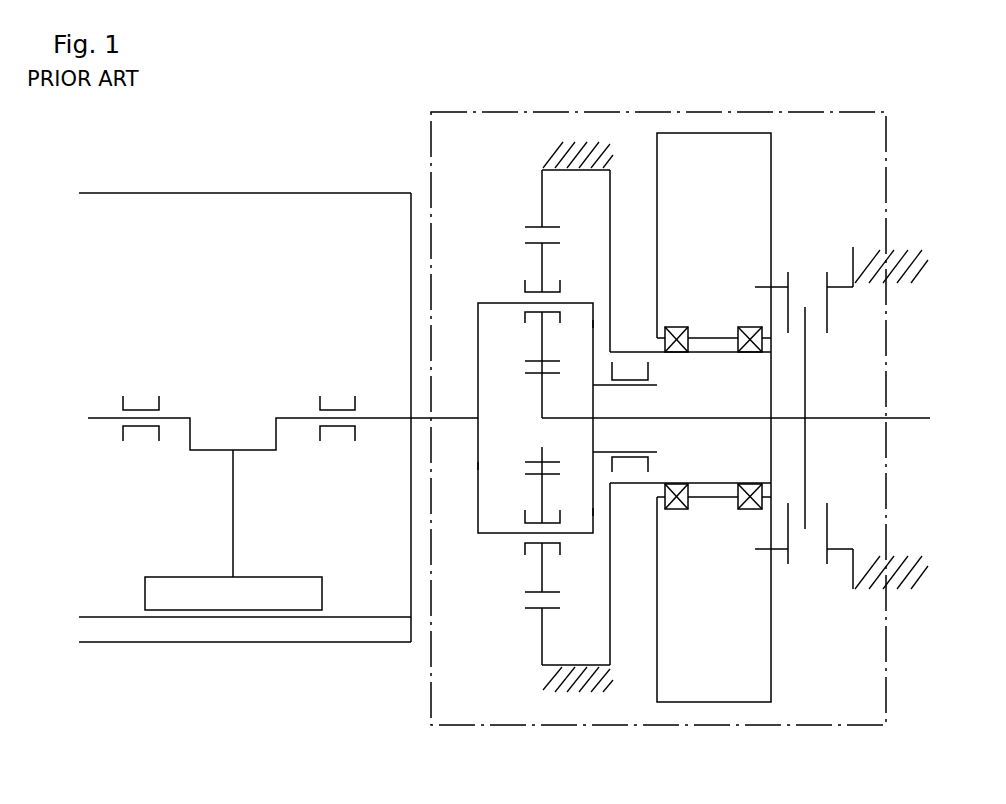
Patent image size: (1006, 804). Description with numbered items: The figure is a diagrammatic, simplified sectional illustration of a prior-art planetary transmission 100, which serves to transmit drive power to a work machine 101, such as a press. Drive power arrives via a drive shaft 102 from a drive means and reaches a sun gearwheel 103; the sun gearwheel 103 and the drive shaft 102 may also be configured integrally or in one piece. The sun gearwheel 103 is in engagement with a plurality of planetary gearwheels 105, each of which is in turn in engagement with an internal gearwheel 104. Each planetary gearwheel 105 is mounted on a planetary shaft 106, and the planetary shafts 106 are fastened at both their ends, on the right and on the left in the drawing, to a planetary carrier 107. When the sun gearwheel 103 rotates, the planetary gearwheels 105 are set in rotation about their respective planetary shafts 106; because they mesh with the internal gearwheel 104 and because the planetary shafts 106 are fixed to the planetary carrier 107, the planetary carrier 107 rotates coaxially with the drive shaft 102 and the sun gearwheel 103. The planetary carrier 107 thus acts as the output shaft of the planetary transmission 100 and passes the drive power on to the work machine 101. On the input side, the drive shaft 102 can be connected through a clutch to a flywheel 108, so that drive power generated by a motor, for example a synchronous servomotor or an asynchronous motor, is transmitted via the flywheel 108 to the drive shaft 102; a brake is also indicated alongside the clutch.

The planetary transmission 100 is at (840, 89).
The work machine 101 is at (158, 161).
The drive shaft 102 is at (923, 422).
The sun gearwheel 103 is at (542, 447).
The internal gearwheel 104 is at (537, 182).
The planetary gearwheel 105 is at (530, 268).
The planetary shaft 106 is at (500, 301).
The planetary carrier 107 is at (587, 322).
The flywheel 108 is at (692, 160).